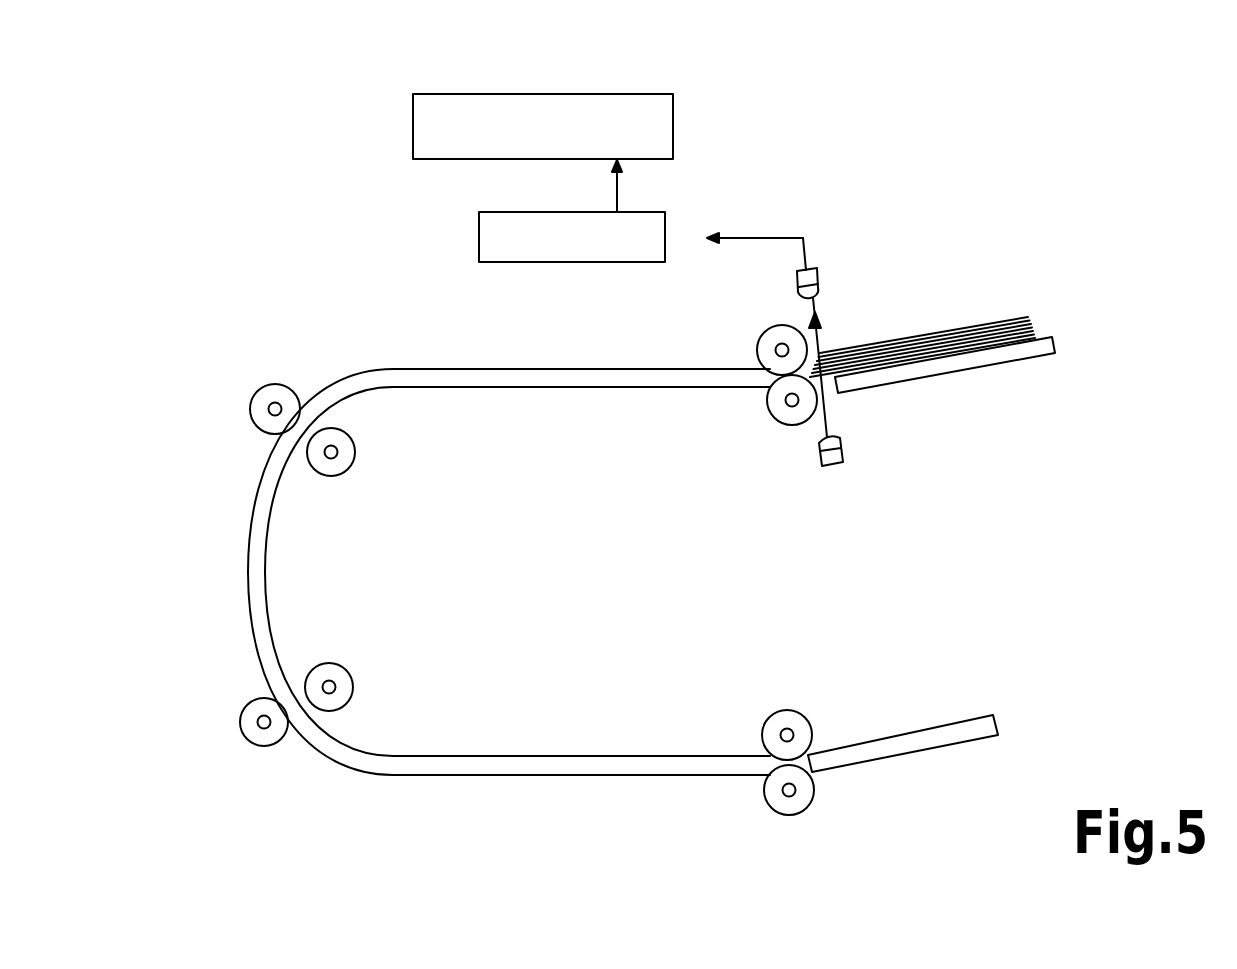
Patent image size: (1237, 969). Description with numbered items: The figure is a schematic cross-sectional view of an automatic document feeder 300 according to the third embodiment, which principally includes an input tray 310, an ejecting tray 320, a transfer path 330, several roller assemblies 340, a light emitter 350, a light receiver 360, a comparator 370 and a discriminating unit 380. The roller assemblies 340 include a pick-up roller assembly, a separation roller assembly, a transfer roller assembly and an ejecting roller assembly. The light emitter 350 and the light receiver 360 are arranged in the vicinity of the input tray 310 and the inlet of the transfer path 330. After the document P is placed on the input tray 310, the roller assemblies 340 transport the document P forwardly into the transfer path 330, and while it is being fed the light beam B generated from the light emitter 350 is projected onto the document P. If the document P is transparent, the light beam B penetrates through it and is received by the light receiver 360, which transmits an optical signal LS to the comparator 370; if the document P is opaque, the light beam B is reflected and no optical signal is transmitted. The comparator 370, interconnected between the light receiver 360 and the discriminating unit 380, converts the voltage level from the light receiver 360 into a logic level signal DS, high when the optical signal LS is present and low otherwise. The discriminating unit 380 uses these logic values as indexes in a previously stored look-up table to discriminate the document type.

The automatic document feeder 300 is at (902, 121).
The input tray 310 is at (1005, 357).
The ejecting tray 320 is at (930, 738).
The transfer path 330 is at (555, 378).
The roller assemblies 340 is at (768, 343).
The light emitter 350 is at (843, 453).
The light receiver 360 is at (813, 278).
The comparator 370 is at (655, 220).
The discriminating unit 380 is at (628, 100).
The document P is at (960, 345).
The light beam B is at (825, 367).
The optical signal LS is at (755, 229).
The logic level signal DS is at (633, 186).